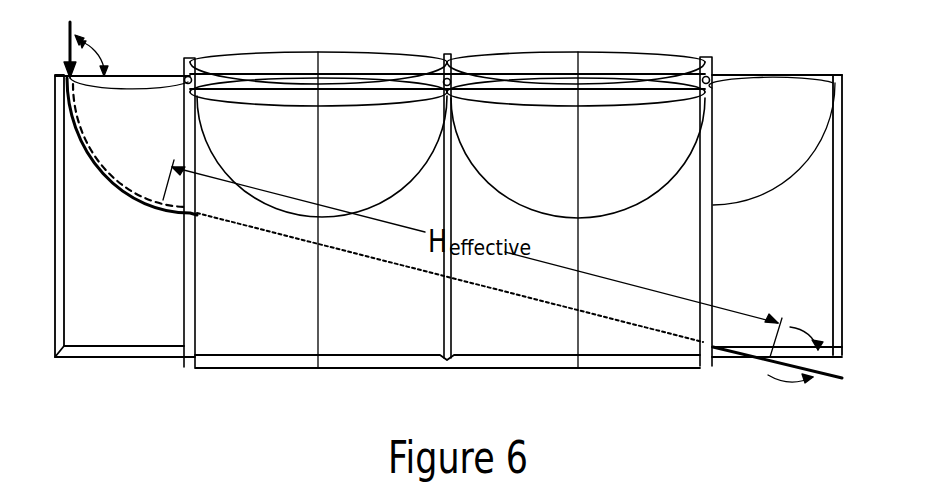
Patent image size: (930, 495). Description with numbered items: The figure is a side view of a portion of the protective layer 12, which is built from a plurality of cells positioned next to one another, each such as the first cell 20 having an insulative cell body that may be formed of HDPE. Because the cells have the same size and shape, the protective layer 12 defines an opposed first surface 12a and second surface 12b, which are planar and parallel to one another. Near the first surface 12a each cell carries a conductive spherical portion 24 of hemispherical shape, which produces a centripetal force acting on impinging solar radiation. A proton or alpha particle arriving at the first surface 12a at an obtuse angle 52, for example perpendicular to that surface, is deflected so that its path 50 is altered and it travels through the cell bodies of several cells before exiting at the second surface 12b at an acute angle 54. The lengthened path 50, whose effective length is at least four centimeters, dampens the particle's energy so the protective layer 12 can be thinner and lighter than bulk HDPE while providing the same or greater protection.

The protective layer 12 is at (850, 204).
The first surface 12a is at (755, 68).
The second surface 12b is at (120, 360).
The first cell 20 is at (86, 262).
The conductive spherical portion 24 is at (820, 138).
The path 50 is at (510, 298).
The obtuse angle 52 is at (93, 45).
The acute angle 54 is at (817, 365).